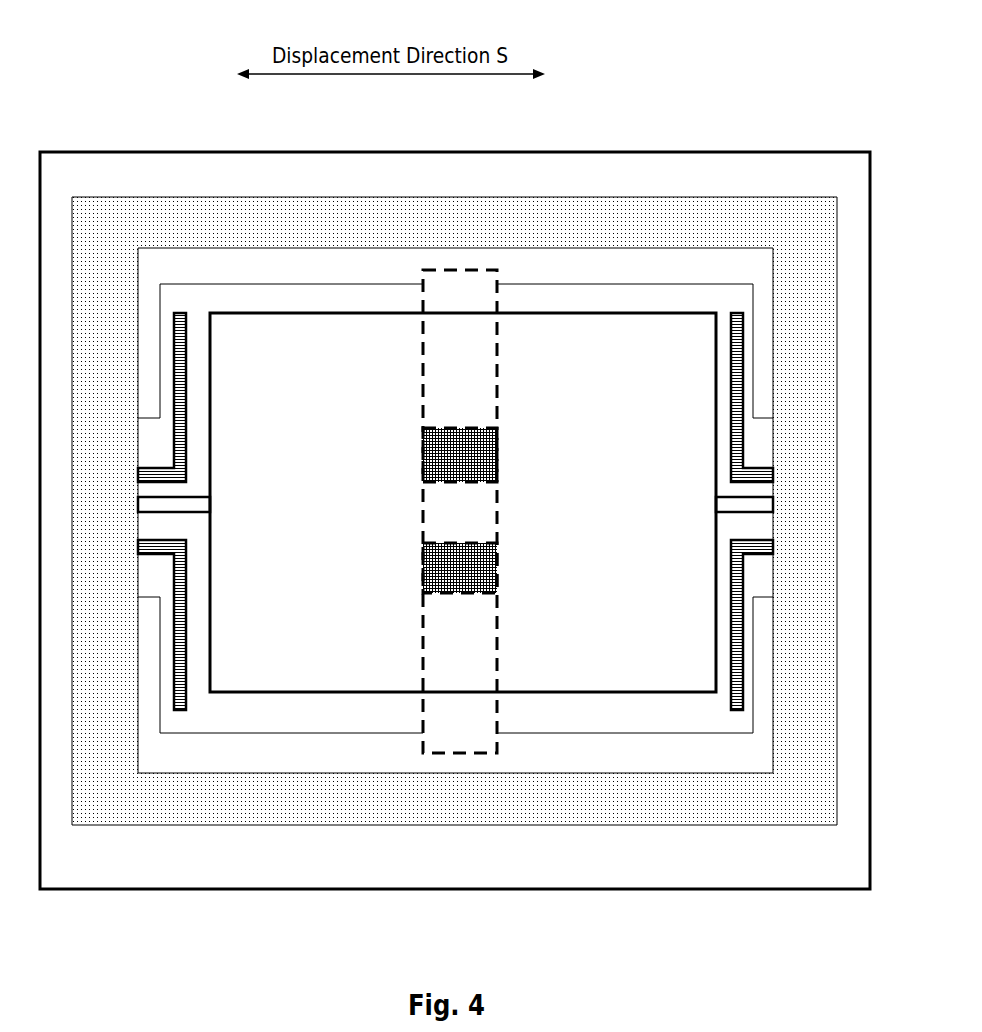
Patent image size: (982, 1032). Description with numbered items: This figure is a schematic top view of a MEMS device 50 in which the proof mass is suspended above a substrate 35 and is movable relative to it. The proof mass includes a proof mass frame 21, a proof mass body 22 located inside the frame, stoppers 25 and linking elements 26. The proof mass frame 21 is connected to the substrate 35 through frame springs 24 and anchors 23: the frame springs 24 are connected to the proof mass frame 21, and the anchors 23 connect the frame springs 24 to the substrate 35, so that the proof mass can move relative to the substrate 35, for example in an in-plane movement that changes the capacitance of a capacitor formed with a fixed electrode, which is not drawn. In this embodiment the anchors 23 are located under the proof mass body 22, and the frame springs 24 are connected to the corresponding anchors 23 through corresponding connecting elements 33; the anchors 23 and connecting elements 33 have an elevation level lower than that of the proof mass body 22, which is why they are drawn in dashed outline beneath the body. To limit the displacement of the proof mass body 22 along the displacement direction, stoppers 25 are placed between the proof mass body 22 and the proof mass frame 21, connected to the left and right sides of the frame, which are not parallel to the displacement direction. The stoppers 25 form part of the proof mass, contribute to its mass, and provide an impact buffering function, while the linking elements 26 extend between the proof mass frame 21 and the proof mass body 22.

The MEMS device 50 is at (793, 75).
The substrate 35 is at (295, 890).
The proof mass frame 21 is at (502, 213).
The frame spring 24 is at (295, 283).
The proof mass body 22 is at (595, 561).
The connecting element 33 is at (471, 384).
The anchor 23 is at (471, 468).
The stopper 25 is at (180, 312).
The linking element 26 is at (192, 514).